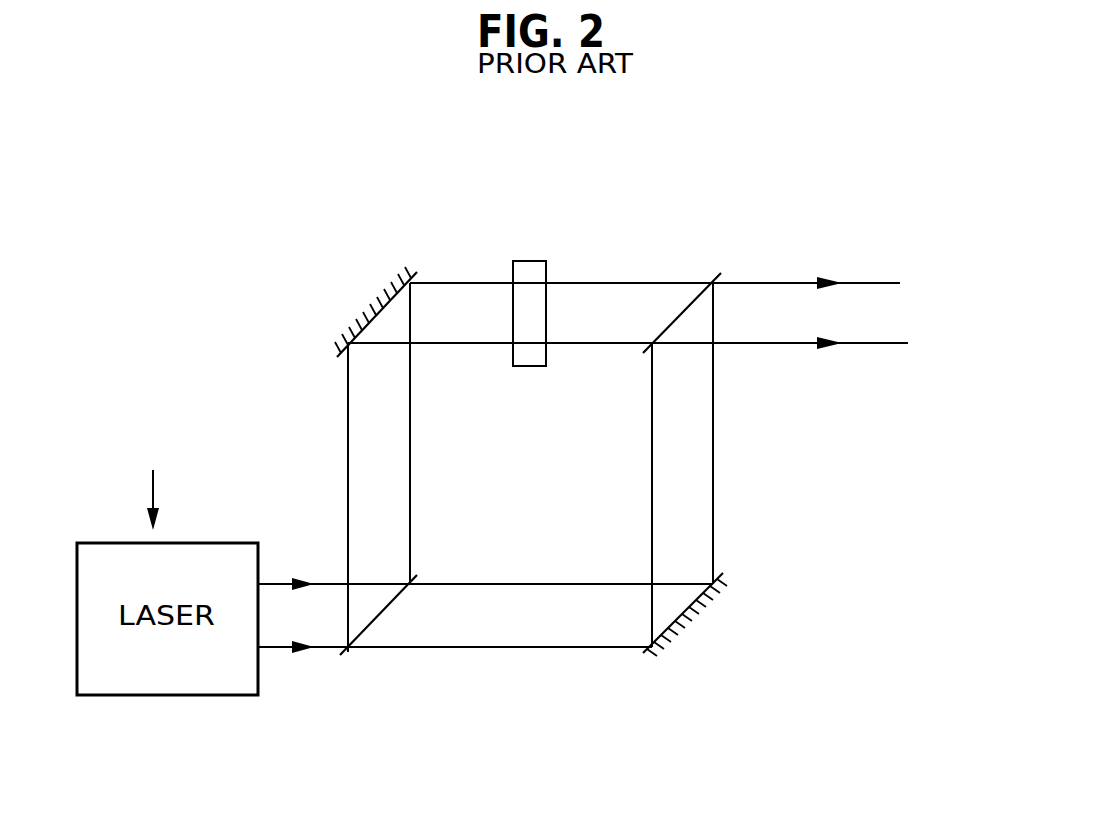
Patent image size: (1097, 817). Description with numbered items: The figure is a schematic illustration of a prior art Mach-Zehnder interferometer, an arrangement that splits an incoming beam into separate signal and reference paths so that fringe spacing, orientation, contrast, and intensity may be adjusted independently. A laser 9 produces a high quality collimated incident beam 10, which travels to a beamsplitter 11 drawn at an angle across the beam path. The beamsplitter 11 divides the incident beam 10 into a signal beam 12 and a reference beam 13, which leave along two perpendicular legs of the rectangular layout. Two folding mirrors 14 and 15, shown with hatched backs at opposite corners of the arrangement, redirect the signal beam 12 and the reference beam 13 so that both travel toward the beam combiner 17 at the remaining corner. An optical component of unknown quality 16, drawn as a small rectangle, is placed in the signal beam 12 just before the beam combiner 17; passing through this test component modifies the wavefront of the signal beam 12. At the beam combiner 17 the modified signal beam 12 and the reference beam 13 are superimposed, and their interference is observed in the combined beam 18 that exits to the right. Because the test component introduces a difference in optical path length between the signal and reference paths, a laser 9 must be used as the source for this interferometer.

The laser 9 is at (154, 483).
The incident beam 10 is at (275, 582).
The beamsplitter 11 is at (372, 625).
The signal beam 12 is at (410, 473).
The reference beam 13 is at (532, 582).
The folding mirror 14 is at (369, 303).
The folding mirror 15 is at (695, 620).
The optical component of unknown quality 16 is at (533, 259).
The beam combiner 17 is at (690, 302).
The combined beam 18 is at (807, 282).